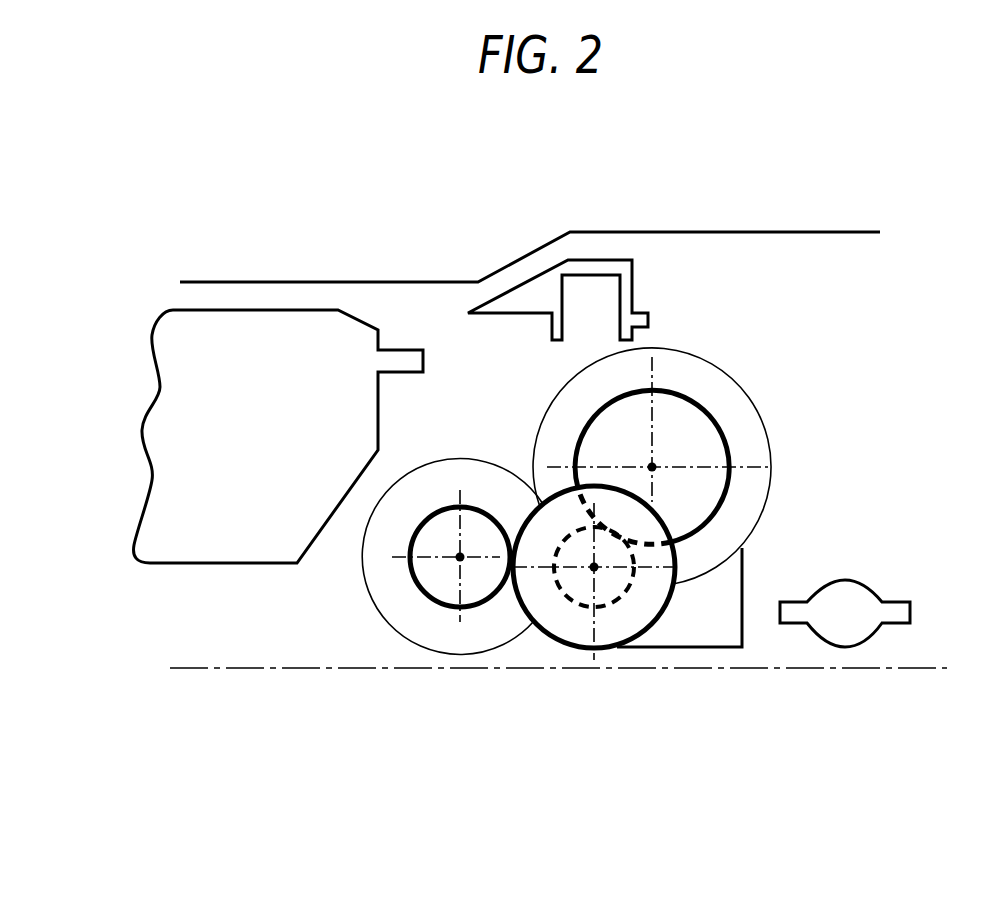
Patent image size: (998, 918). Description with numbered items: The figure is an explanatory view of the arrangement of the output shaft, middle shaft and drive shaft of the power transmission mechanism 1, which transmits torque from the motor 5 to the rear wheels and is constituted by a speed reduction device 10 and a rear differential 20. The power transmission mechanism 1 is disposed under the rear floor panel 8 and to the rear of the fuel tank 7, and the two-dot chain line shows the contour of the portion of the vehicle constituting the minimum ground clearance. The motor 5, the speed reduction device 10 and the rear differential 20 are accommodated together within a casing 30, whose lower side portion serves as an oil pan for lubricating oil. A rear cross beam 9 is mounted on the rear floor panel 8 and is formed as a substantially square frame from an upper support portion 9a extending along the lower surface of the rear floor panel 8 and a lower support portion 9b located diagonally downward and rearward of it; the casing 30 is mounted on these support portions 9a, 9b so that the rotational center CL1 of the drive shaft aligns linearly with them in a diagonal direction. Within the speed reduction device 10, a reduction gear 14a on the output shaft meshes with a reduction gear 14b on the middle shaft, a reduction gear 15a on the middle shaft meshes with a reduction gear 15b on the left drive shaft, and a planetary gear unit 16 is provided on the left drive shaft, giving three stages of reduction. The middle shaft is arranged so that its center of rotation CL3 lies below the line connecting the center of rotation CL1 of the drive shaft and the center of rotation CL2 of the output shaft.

The power transmission mechanism 1 is at (523, 784).
The motor 5 is at (377, 498).
The fuel tank 7 is at (193, 565).
The rear floor panel 8 is at (743, 232).
The rear cross beam 9 is at (719, 409).
The upper support portion 9a is at (603, 260).
The lower support portion 9b is at (898, 602).
The speed reduction device 10 is at (488, 686).
The reduction gear 14a is at (410, 565).
The reduction gear 14b is at (657, 622).
The reduction gear 15a is at (567, 596).
The reduction gear 15b is at (726, 432).
The planetary gear unit 16 is at (725, 370).
The rear differential 20 is at (788, 392).
The casing 30 is at (728, 648).
The rotational center of drive shaft CL1 is at (652, 467).
The center of rotation of output shaft CL2 is at (460, 557).
The center of rotation of middle shaft CL3 is at (594, 567).